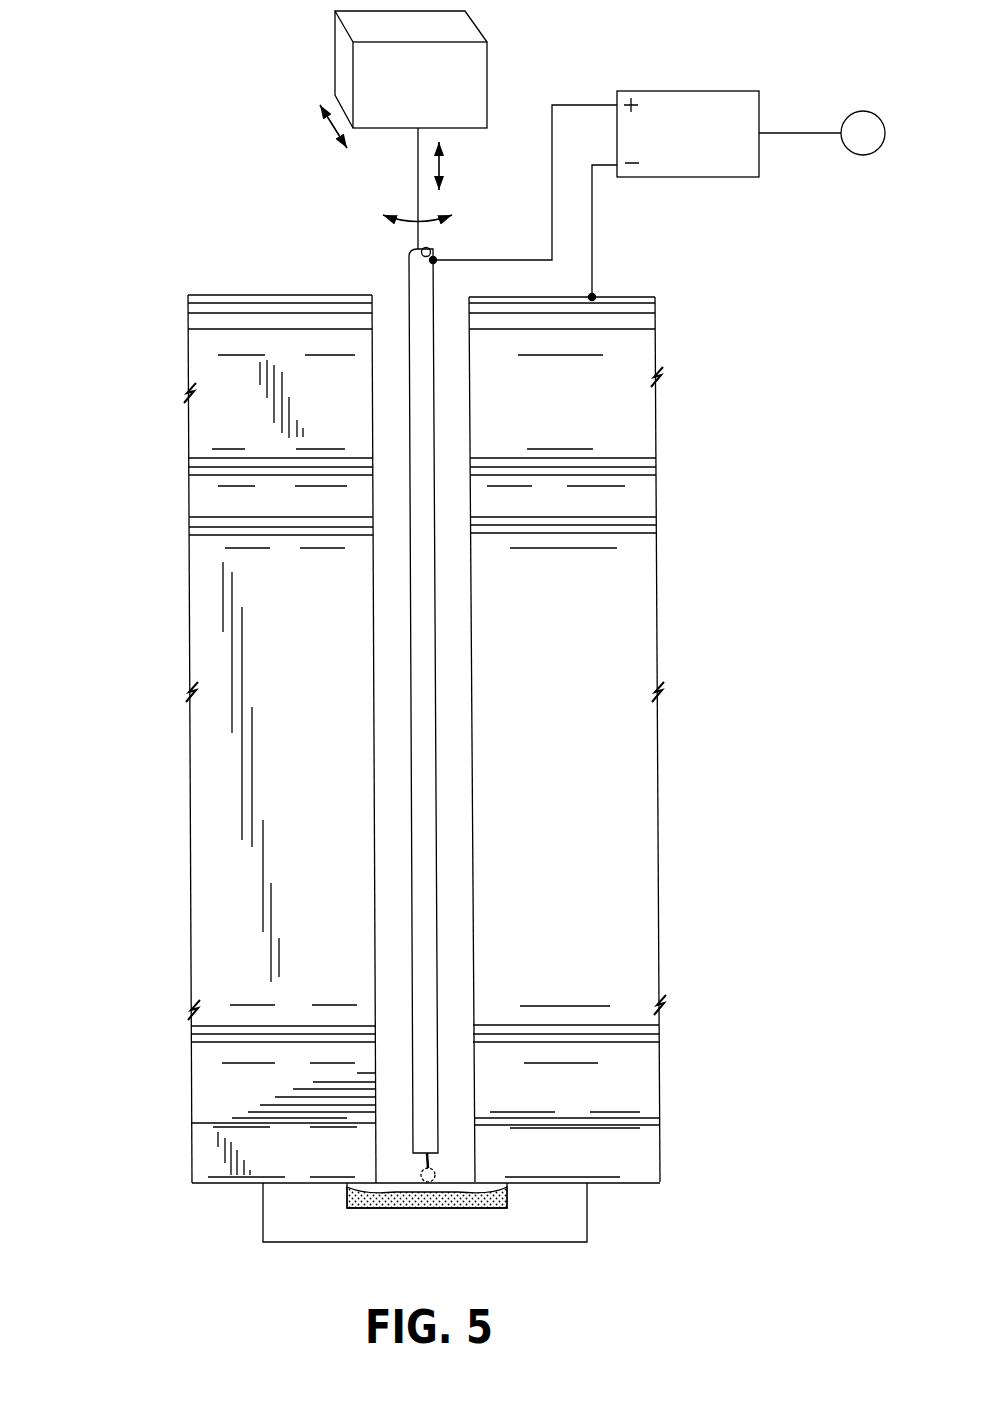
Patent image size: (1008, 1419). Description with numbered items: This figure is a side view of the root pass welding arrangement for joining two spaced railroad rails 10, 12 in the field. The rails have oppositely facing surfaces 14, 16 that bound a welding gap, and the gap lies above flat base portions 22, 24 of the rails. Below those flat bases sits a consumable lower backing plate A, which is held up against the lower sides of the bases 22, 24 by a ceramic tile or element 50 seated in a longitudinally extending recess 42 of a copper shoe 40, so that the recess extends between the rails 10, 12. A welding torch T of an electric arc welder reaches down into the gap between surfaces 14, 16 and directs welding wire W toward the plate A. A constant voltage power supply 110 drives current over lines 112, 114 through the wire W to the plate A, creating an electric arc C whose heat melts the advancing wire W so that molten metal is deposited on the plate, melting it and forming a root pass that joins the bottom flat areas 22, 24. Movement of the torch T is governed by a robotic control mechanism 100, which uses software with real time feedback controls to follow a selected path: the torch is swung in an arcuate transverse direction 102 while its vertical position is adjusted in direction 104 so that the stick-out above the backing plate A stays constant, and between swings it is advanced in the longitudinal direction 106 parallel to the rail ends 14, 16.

The railroad rail 10 is at (189, 626).
The railroad rail 12 is at (658, 603).
The facing surface 14 is at (373, 628).
The facing surface 16 is at (472, 745).
The flat base portion 22 is at (373, 1178).
The flat base portion 24 is at (480, 1180).
The copper shoe 40 is at (589, 1213).
The recess 42 is at (508, 1200).
The ceramic tile or element 50 is at (448, 1200).
The robotic control mechanism 100 is at (491, 53).
The arcuate or swinging transverse direction 102 is at (403, 218).
The vertical direction 104 is at (441, 165).
The longitudinal direction 106 is at (333, 128).
The power supply 110 is at (710, 178).
The line 112 is at (490, 258).
The line 114 is at (593, 253).
The welding torch T is at (436, 395).
The welding wire W is at (432, 1162).
The electric arc C is at (420, 1172).
The backing plate A is at (398, 1193).